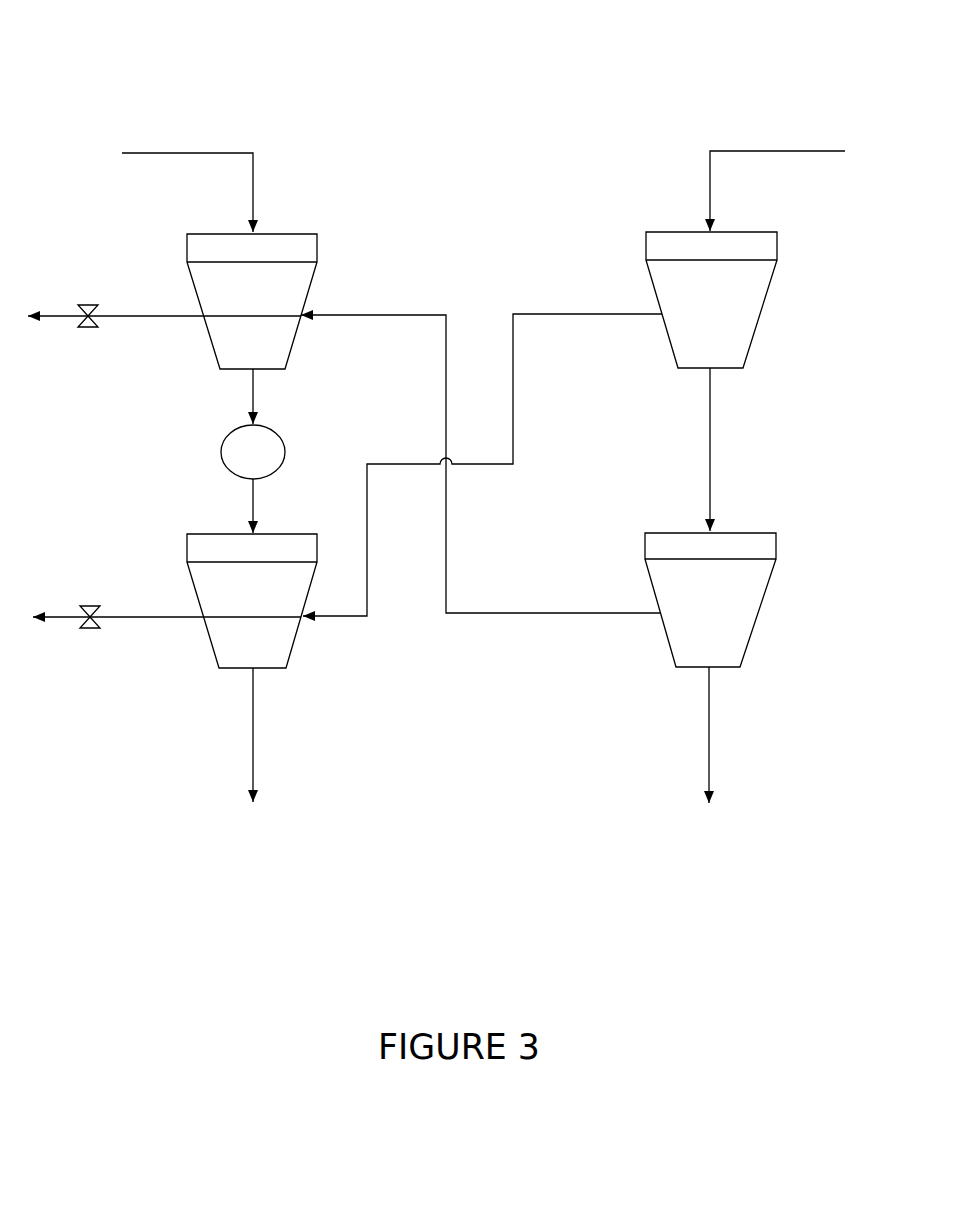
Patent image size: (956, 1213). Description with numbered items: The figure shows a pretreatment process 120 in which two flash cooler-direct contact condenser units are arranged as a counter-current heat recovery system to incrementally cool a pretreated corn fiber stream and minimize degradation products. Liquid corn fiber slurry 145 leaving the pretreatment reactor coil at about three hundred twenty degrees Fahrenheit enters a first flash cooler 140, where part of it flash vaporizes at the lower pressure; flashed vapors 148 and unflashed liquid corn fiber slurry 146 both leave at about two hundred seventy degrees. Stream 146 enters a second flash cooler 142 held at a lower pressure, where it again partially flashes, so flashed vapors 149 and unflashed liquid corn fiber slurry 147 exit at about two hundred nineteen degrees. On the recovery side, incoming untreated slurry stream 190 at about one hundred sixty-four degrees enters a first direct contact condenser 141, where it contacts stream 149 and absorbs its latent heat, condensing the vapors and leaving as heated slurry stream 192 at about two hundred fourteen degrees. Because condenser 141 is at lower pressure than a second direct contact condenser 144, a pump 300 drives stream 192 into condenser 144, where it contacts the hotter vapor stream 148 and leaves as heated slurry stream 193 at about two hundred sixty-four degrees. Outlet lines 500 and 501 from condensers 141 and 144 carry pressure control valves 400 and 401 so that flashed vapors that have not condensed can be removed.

The pretreatment process 120 is at (742, 102).
The liquid corn fiber slurry 145 is at (817, 148).
The untreated slurry stream 190 is at (257, 192).
The first direct contact condenser 141 is at (313, 290).
The first flash cooler 140 is at (762, 317).
The second direct contact condenser 144 is at (295, 638).
The second flash cooler 142 is at (757, 615).
The outlet line 500 is at (153, 318).
The pressure control valve 400 is at (88, 305).
The outlet line 501 is at (153, 618).
The pressure control valve 401 is at (90, 606).
The heated slurry stream 192 is at (255, 395).
The pump 300 is at (267, 457).
The heated slurry stream 193 is at (253, 728).
The unflashed liquid corn fiber slurry 146 is at (710, 473).
The unflashed liquid corn fiber slurry 147 is at (708, 738).
The flashed vapors 148 is at (578, 312).
The flashed vapors 149 is at (532, 610).